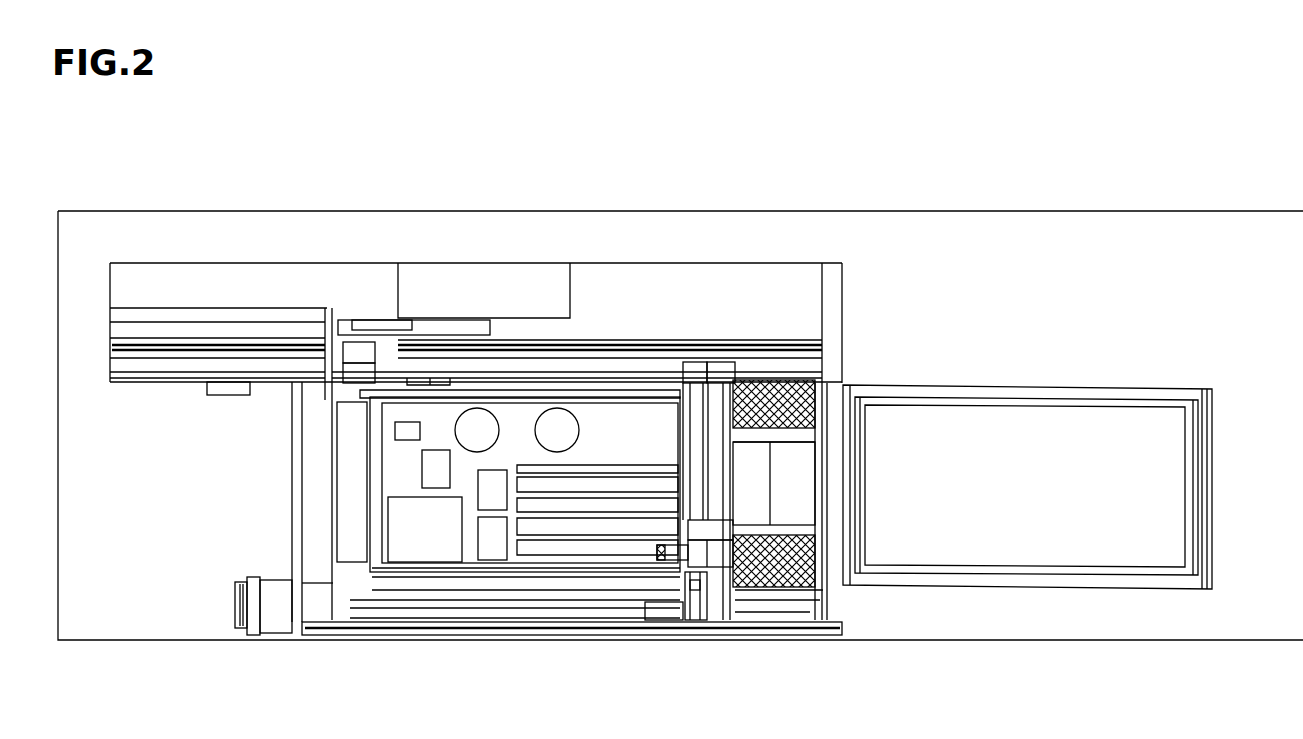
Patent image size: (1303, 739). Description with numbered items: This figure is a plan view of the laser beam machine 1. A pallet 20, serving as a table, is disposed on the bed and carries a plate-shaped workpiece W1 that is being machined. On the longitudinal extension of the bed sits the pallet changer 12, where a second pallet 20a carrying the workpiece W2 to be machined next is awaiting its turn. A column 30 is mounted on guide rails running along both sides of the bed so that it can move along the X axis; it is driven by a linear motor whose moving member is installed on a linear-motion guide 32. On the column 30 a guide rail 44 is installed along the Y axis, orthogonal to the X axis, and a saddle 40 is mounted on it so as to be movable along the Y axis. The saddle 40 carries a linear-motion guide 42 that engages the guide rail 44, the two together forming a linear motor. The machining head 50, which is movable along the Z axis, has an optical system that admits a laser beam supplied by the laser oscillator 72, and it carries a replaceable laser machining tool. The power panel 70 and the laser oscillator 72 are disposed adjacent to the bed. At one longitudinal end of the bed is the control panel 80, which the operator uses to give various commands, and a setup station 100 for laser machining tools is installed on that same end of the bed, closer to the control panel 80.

The laser beam machine 1 is at (870, 191).
The pallet changer 12 is at (1010, 585).
The pallet 20 is at (520, 429).
The pallet 20a is at (1027, 506).
The column 30 is at (700, 618).
The linear-motion guide 32 is at (662, 612).
The saddle 40 is at (752, 595).
The linear-motion guide 42 is at (707, 583).
The guide rail 44 is at (697, 387).
The machining head 50 is at (657, 548).
The power panel 70 is at (313, 285).
The laser oscillator 72 is at (757, 277).
The control panel 80 is at (270, 623).
The setup station 100 is at (347, 463).
The workpiece W1 is at (620, 427).
The workpiece W2 is at (1013, 428).